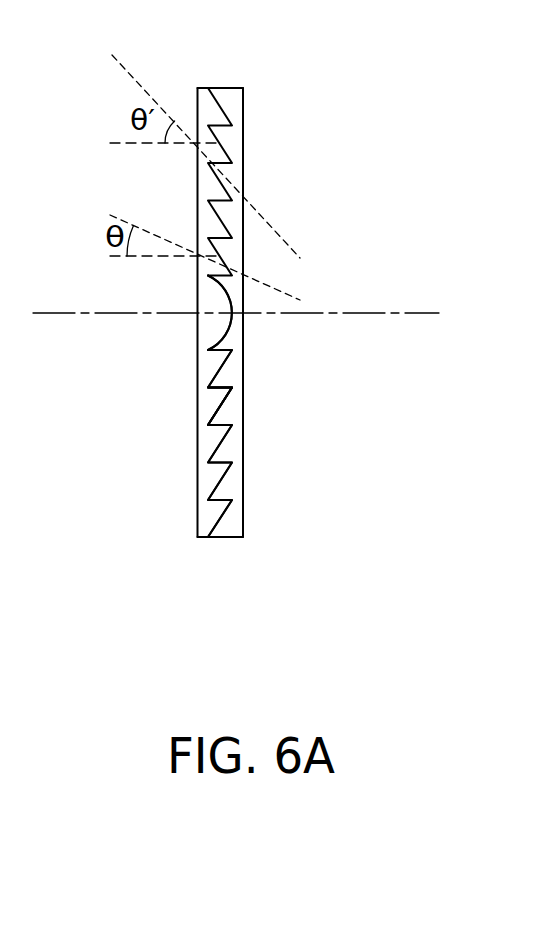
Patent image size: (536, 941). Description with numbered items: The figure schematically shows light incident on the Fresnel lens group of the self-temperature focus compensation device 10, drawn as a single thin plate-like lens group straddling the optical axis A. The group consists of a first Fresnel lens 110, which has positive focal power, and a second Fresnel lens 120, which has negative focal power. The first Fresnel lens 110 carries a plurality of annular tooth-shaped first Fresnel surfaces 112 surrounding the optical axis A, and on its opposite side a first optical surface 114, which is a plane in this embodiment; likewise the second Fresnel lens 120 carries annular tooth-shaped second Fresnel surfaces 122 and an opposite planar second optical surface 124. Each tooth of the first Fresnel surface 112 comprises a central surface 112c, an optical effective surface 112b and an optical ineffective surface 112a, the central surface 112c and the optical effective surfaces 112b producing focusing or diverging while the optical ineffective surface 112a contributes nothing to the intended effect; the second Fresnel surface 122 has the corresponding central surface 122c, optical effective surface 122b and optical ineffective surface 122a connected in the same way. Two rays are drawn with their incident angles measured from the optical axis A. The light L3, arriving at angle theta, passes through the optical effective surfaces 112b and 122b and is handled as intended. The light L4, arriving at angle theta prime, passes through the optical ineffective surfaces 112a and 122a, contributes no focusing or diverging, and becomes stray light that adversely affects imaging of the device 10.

The self-temperature focus compensation device 10 is at (270, 70).
The first Fresnel lens 110 is at (149, 321).
The first Fresnel surface 112 is at (143, 312).
The optical ineffective surface 112a is at (212, 389).
The optical effective surface 112b is at (210, 420).
The central surface 112c is at (226, 340).
The first optical surface 114 is at (198, 502).
The second Fresnel lens 120 is at (296, 319).
The second Fresnel surface 122 is at (296, 407).
The optical ineffective surface 122a is at (228, 389).
The optical effective surface 122b is at (218, 412).
The central surface 122c is at (229, 340).
The second optical surface 124 is at (245, 501).
The optical axis A is at (425, 312).
The light L3 is at (156, 234).
The light L4 is at (157, 97).